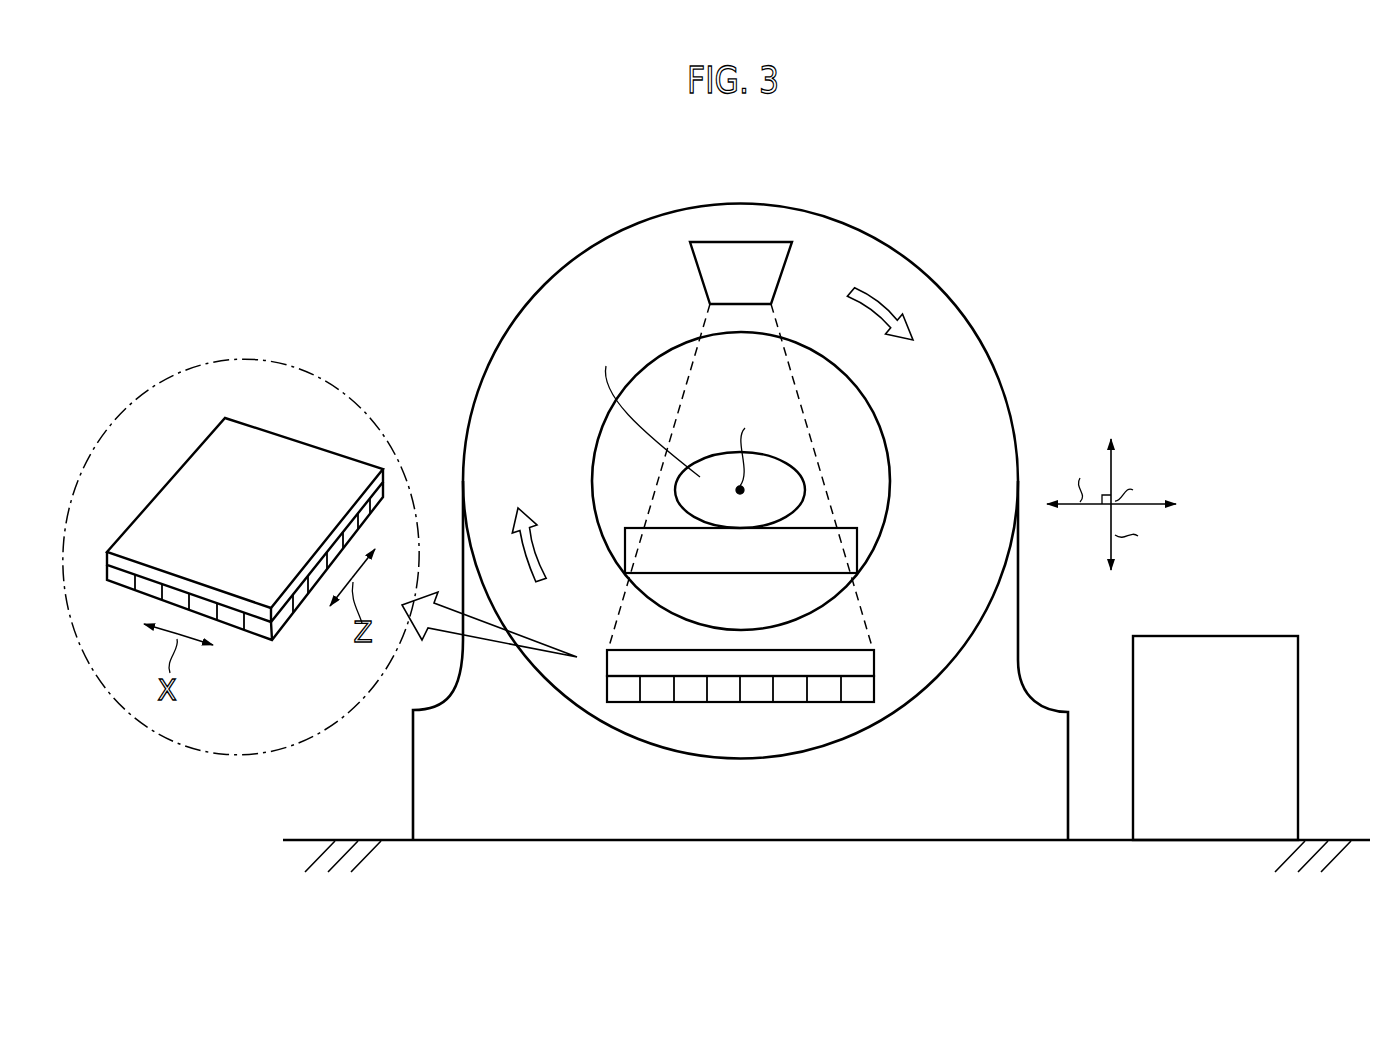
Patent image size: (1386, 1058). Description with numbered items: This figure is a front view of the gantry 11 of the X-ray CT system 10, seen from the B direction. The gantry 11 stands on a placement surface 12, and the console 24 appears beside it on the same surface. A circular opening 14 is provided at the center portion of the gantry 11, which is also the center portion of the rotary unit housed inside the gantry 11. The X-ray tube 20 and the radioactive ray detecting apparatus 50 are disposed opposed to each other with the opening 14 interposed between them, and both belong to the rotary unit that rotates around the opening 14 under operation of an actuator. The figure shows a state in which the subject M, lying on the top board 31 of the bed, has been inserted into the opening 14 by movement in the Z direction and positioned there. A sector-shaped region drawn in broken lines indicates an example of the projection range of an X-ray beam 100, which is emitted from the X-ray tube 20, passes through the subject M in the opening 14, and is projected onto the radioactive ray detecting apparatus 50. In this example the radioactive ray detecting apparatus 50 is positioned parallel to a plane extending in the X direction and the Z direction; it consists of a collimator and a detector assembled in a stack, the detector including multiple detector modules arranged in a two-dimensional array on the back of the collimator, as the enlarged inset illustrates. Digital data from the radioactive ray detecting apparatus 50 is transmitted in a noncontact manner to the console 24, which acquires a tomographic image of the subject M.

The X-ray CT system 10 is at (957, 190).
The gantry 11 is at (576, 251).
The placement surface 12 is at (1340, 836).
The opening 14 is at (864, 461).
The X-ray tube 20 is at (742, 255).
The console 24 is at (1210, 636).
The top board 31 is at (857, 545).
The radioactive ray detecting apparatus 50 is at (566, 672).
The X-ray beam 100 is at (802, 408).